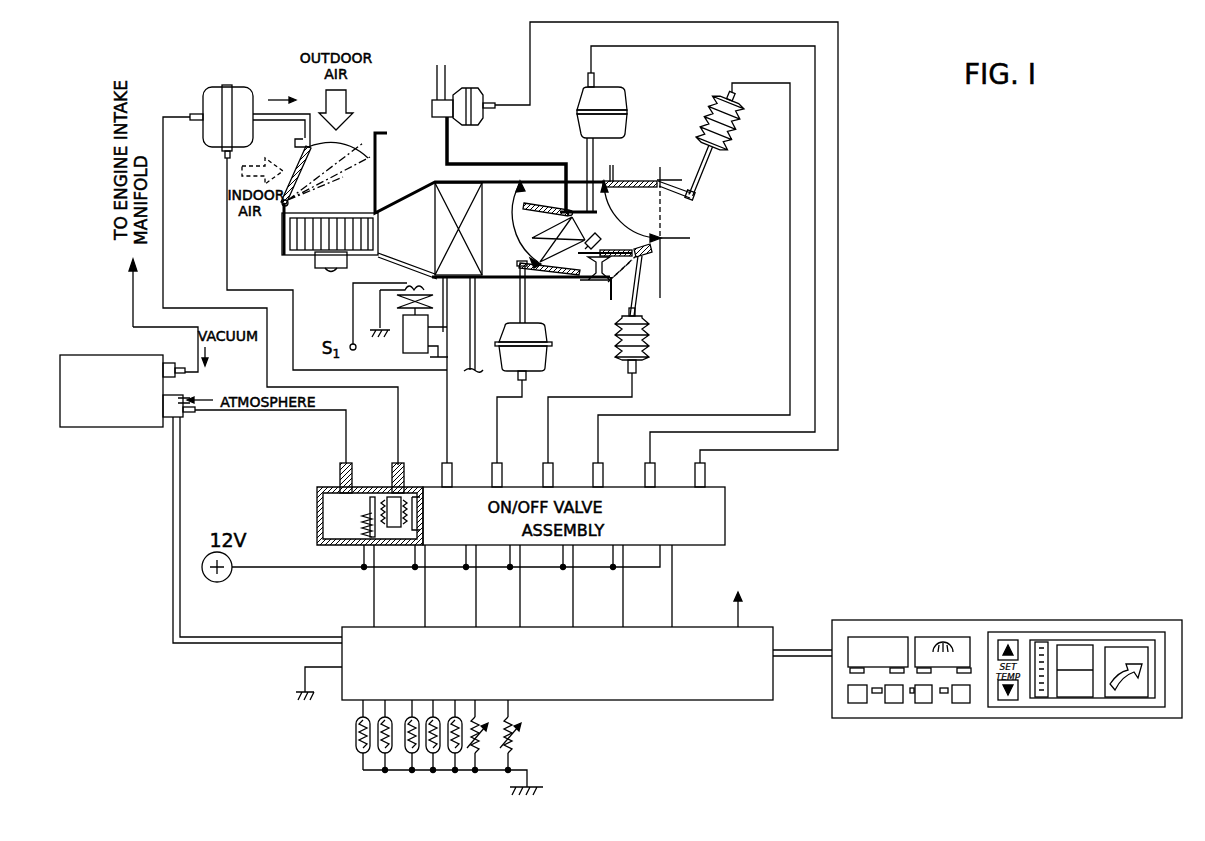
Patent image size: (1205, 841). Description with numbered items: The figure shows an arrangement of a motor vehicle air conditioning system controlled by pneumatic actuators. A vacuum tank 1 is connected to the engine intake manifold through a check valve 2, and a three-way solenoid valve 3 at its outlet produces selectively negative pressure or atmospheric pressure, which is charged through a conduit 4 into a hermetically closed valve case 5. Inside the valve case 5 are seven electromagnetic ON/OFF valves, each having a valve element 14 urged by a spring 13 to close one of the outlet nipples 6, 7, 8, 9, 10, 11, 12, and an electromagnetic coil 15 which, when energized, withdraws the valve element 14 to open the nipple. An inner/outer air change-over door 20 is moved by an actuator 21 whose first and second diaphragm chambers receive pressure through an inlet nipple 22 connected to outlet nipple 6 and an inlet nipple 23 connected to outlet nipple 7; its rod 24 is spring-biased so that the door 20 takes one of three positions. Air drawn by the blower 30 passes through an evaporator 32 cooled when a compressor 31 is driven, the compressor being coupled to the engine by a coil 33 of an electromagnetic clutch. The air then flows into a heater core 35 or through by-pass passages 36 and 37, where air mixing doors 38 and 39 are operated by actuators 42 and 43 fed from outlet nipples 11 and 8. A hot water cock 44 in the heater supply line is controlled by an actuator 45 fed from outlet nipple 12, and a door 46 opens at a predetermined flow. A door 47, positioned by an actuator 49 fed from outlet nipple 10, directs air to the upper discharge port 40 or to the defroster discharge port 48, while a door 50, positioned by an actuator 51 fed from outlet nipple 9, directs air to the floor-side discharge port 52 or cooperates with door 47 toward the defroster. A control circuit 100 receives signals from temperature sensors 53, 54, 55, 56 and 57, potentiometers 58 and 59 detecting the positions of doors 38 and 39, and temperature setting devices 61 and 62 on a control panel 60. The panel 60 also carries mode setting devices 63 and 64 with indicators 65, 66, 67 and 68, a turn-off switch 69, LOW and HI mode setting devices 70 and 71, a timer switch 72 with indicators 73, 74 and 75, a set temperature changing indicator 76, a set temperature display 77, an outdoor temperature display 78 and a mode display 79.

The vacuum tank 1 is at (96, 427).
The check valve 2 is at (170, 363).
The three-way solenoid valve 3 is at (170, 424).
The conduit 4 is at (248, 411).
The valve case 5 is at (317, 511).
The outlet nipple 6 is at (402, 476).
The outlet nipple 7 is at (452, 473).
The outlet nipple 8 is at (502, 473).
The outlet nipple 9 is at (553, 473).
The outlet nipple 10 is at (603, 473).
The outlet nipple 11 is at (655, 473).
The outlet nipple 12 is at (705, 473).
The spring 13 is at (384, 538).
The valve element 14 is at (392, 500).
The electromagnetic coil 15 is at (361, 522).
The inner/outer air change-over door 20 is at (298, 172).
The actuator 21 is at (213, 94).
The inlet nipple 22 is at (193, 122).
The inlet nipple 23 is at (236, 157).
The rod 24 is at (256, 112).
The blower 30 is at (313, 265).
The compressor 31 is at (403, 341).
The evaporator 32 is at (435, 228).
The coil of electromagnetic clutch 33 is at (405, 282).
The heater core 35 is at (526, 249).
The by-pass passage 36 is at (606, 180).
The by-pass passage 37 is at (528, 292).
The air mixing door 38 is at (529, 207).
The air mixing door 39 is at (567, 276).
The discharge port 40 is at (686, 222).
The actuator 42 is at (623, 97).
The actuator 43 is at (548, 356).
The hot water cock 44 is at (442, 120).
The actuator 45 is at (476, 96).
The door 46 is at (597, 248).
The door 47 is at (630, 189).
The defroster discharge port 48 is at (643, 173).
The actuator 49 is at (743, 141).
The door 50 is at (641, 292).
The actuator 51 is at (652, 344).
The floor-side discharge port 52 is at (623, 293).
The temperature sensor 53 is at (355, 738).
The temperature sensor 54 is at (380, 760).
The outdoor temperature sensor 55 is at (402, 760).
The temperature sensor 56 is at (430, 760).
The temperature sensor 57 is at (460, 760).
The potentiometer 58 is at (478, 762).
The potentiometer 59 is at (514, 749).
The control panel 60 is at (1156, 620).
The temperature setting device 61 is at (1010, 640).
The temperature setting device 62 is at (1011, 701).
The mode setting device 63 is at (862, 637).
The mode setting device 64 is at (940, 637).
The indicator 65 is at (850, 671).
The indicator 66 is at (904, 665).
The indicator 67 is at (926, 676).
The indicator 68 is at (968, 668).
The turn-off switch 69 is at (853, 702).
The LOW mode setting device 70 is at (893, 704).
The HI mode setting device 71 is at (924, 704).
The timer switch 72 is at (962, 704).
The indicator 73 is at (877, 694).
The indicator 74 is at (912, 694).
The indicator 75 is at (944, 694).
The set temperature changing indicator 76 is at (1043, 645).
The set temperature display 77 is at (1085, 645).
The outdoor temperature display 78 is at (1080, 698).
The mode display 79 is at (1127, 698).
The control circuit 100 is at (700, 700).